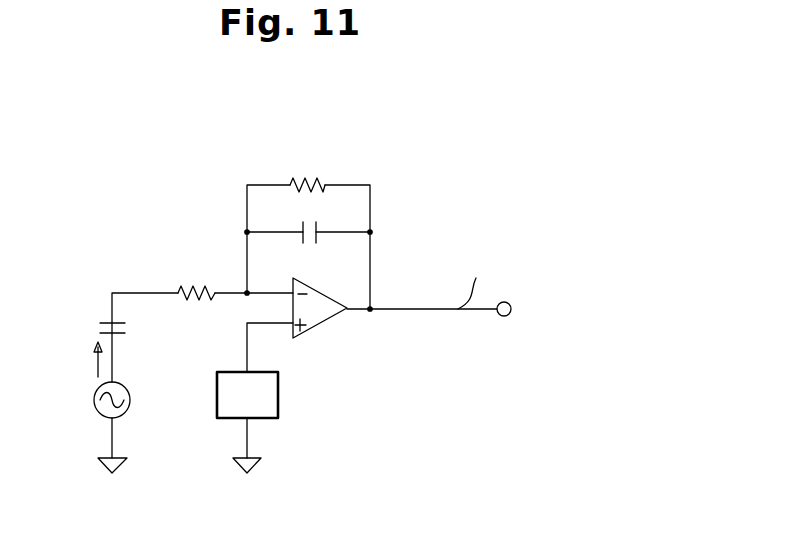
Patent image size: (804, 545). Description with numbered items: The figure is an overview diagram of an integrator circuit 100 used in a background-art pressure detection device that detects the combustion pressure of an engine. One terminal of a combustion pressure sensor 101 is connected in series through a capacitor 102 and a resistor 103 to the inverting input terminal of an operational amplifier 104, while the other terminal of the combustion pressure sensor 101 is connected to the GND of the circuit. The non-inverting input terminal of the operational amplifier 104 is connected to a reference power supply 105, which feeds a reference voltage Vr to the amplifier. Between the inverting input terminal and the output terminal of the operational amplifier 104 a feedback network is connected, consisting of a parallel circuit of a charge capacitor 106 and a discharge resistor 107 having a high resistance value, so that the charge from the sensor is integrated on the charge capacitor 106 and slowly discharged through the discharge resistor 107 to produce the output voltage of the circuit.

The integrator circuit 100 is at (410, 187).
The combustion pressure sensor 101 is at (136, 407).
The capacitor 102 is at (135, 335).
The resistor 103 is at (198, 281).
The operational amplifier 104 is at (323, 322).
The reference power supply 105 is at (278, 403).
The charge capacitor 106 is at (308, 221).
The discharge resistor 107 is at (308, 174).